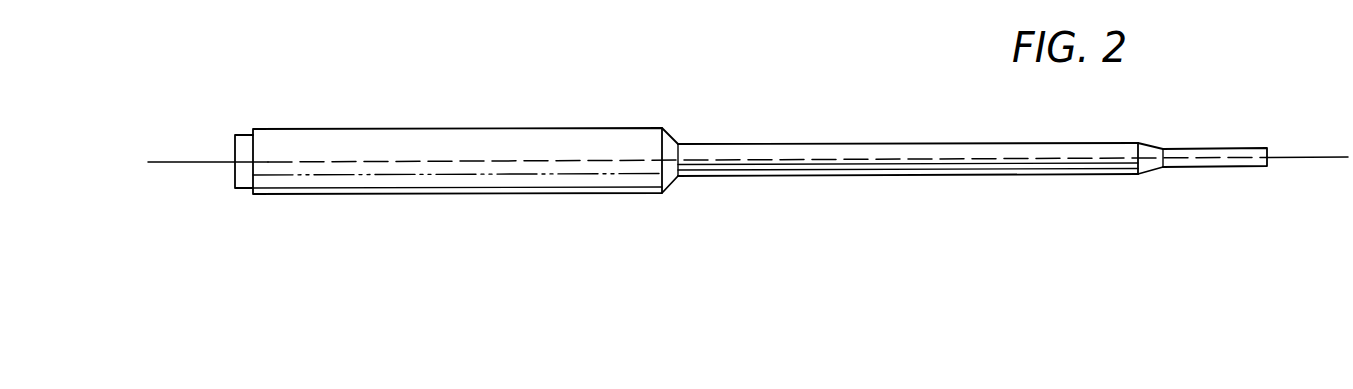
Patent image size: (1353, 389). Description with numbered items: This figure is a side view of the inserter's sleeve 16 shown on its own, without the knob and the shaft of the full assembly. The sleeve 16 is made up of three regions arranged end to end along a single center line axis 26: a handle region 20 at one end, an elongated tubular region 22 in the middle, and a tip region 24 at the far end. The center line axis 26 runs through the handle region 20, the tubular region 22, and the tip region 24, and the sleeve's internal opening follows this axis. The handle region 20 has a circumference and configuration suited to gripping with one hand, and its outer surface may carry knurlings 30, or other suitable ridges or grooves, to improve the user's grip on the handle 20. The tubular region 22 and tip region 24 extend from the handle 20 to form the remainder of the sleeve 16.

The sleeve 16 is at (660, 228).
The handle region 20 is at (328, 192).
The tubular region 22 is at (835, 168).
The tip region 24 is at (1245, 160).
The center line axis 26 is at (1305, 158).
The knurlings 30 is at (487, 177).